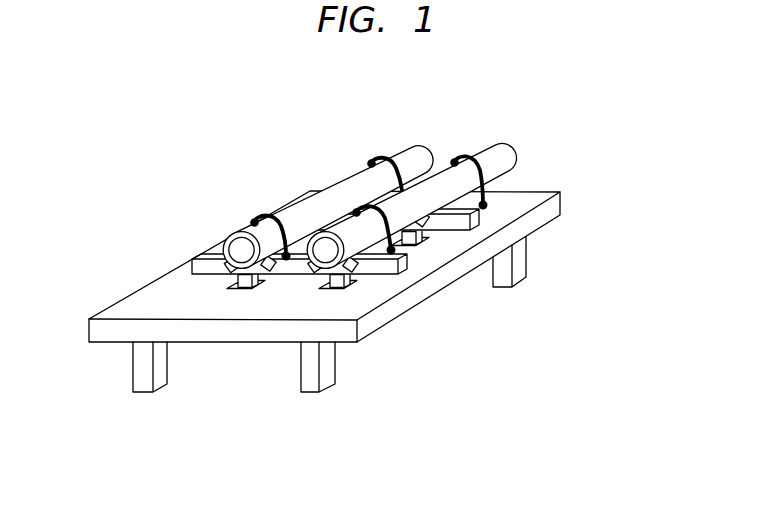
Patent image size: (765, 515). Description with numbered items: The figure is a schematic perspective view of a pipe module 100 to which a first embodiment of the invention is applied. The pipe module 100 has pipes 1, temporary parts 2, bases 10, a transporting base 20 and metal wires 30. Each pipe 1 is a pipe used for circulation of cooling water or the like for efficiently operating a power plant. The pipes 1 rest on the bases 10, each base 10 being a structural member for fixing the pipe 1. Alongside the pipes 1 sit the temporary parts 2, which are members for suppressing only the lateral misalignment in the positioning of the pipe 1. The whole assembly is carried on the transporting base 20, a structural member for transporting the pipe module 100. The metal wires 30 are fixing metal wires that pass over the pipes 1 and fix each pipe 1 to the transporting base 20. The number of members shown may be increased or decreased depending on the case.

The pipe 1 is at (236, 227).
The temporary part 2 is at (357, 273).
The base 10 is at (399, 274).
The transporting base 20 is at (467, 262).
The metal wire 30 is at (369, 172).
The pipe module 100 is at (372, 243).